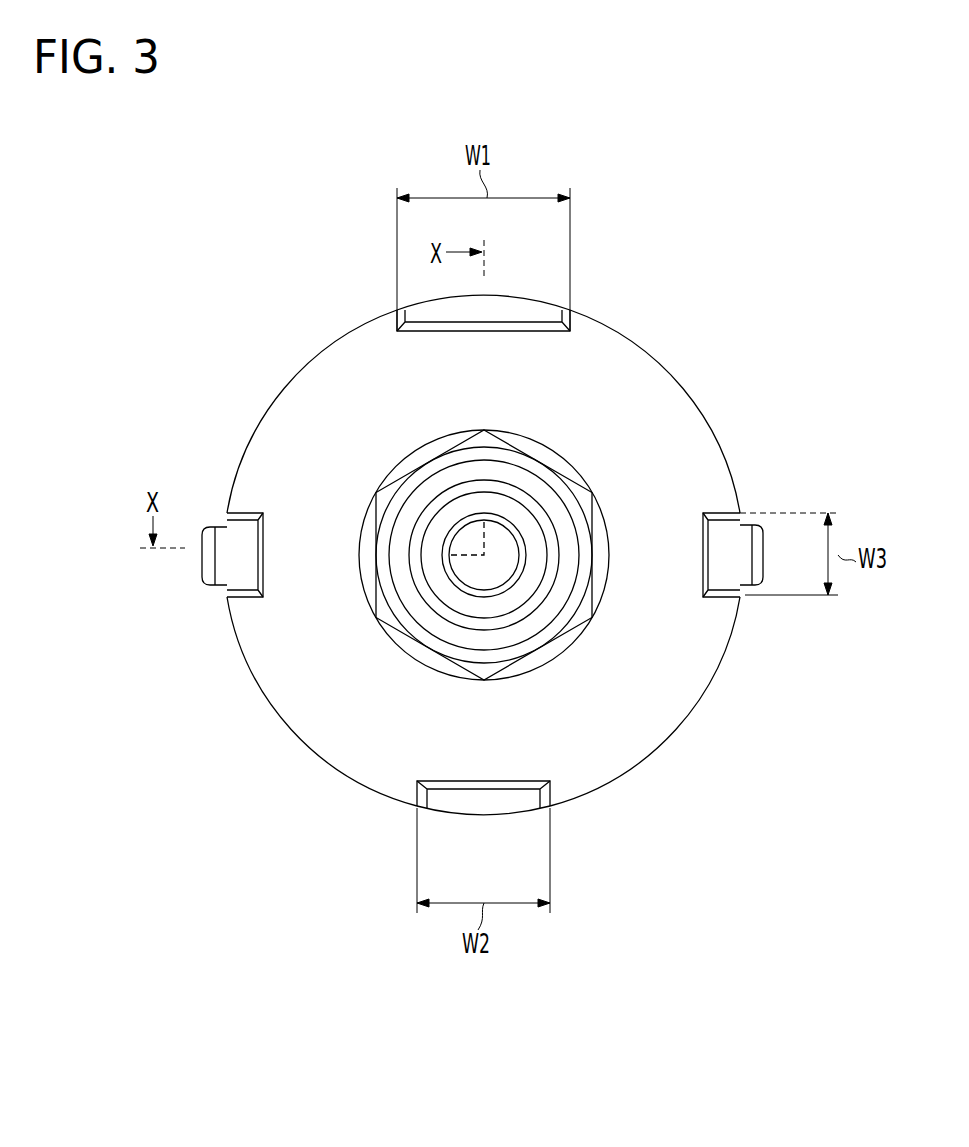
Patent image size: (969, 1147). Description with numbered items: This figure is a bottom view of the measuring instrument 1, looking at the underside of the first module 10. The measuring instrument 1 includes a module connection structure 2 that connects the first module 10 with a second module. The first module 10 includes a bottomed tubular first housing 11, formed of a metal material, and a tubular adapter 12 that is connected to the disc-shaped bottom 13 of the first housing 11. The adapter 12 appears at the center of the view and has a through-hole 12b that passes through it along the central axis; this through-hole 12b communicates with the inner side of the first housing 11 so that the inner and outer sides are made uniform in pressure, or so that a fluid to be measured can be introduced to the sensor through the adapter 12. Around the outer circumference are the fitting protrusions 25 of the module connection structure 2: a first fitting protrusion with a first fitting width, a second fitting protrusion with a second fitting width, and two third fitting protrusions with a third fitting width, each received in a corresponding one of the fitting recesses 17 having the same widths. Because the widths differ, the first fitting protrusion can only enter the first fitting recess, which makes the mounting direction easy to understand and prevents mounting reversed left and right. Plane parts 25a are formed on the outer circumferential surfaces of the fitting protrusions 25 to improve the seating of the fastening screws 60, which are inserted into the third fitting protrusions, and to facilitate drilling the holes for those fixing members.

The measuring instrument 1 is at (238, 287).
The module connection structure 2 is at (393, 802).
The first module 10 is at (180, 724).
The first housing 11 is at (268, 700).
The adapter 12 is at (400, 637).
The through-hole 12b is at (488, 596).
The bottom 13 is at (615, 739).
The fitting recesses 17 is at (542, 325).
The fitting protrusions 25 is at (527, 312).
The plane parts 25a is at (467, 297).
The fastening screws 60 is at (205, 540).